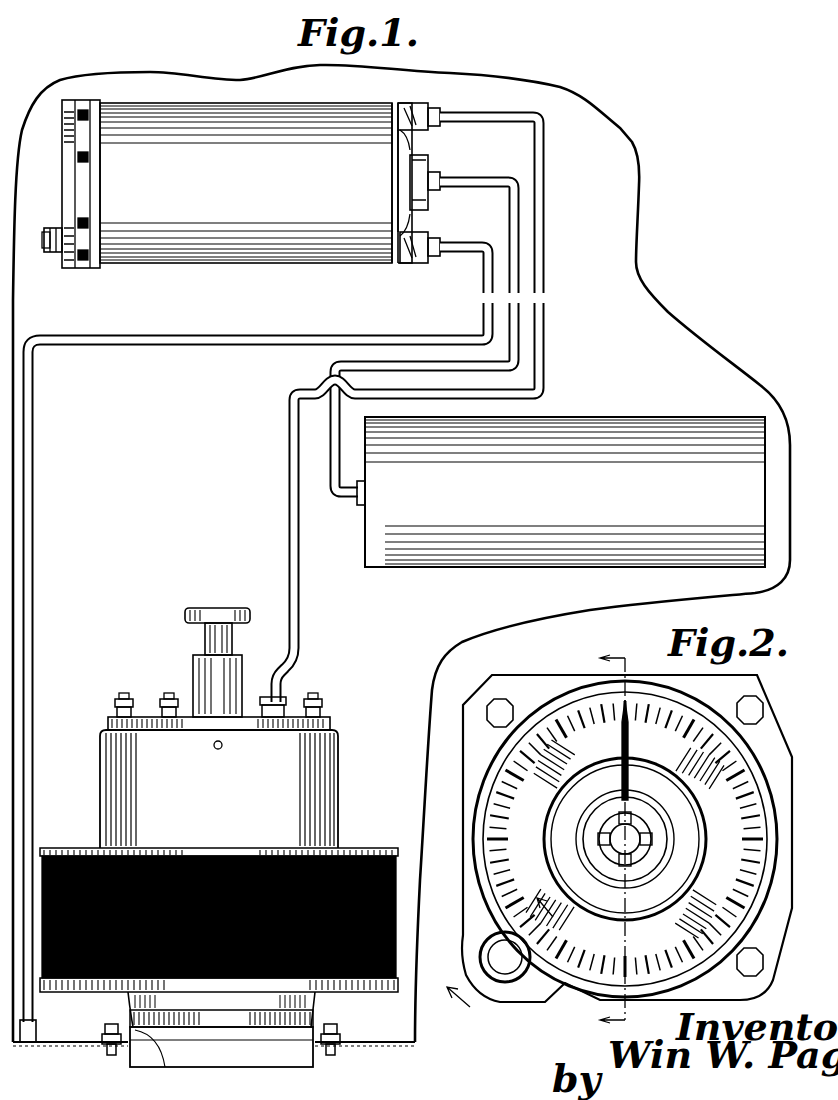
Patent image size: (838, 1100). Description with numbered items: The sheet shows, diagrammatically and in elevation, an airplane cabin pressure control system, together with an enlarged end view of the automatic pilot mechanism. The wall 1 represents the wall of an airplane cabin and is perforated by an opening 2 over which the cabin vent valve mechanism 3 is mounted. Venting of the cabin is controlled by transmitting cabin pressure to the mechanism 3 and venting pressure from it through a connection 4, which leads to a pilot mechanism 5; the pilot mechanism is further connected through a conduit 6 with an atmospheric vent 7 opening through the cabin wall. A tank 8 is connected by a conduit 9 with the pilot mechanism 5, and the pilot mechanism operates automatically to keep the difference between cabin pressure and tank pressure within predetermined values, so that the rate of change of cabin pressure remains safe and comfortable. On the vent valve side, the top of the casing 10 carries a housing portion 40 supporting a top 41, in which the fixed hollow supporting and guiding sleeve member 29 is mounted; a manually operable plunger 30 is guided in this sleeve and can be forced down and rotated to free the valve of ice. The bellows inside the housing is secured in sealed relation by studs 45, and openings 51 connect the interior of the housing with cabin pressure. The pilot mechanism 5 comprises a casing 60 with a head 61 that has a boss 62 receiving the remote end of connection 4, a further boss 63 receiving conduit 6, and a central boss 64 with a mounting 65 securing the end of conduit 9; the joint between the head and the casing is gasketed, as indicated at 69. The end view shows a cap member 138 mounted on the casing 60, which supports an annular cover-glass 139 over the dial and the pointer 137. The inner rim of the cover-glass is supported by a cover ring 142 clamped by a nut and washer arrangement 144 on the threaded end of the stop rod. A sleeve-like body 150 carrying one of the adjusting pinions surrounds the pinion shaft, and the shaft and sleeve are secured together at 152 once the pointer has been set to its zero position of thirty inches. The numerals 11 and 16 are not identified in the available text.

In FIG. 1, the wall 1 is at (668, 345).
In FIG. 1, the opening 2 is at (126, 1055).
In FIG. 1, the cabin vent valve mechanism 3 is at (211, 709).
In FIG. 2, the cabin vent valve mechanism 3 is at (526, 840).
In FIG. 1, the connection 4 is at (289, 530).
In FIG. 1, the pilot mechanism 5 is at (248, 168).
In FIG. 2, the pilot mechanism 5 is at (462, 732).
In FIG. 1, the conduit 6 is at (198, 336).
In FIG. 1, the atmospheric vent 7 is at (30, 1042).
In FIG. 1, the tank 8 is at (625, 437).
In FIG. 1, the conduit 9 is at (519, 241).
In FIG. 1, the casing 10 is at (312, 999).
In FIG. 1, the base 11 is at (163, 1062).
In FIG. 1, the solenoid coil 16 is at (72, 848).
In FIG. 1, the supporting and guiding sleeve member 29 is at (196, 656).
In FIG. 1, the manually operable plunger 30 is at (218, 608).
In FIG. 1, the housing portion 40 is at (100, 775).
In FIG. 1, the top 41 is at (108, 722).
In FIG. 1, the studs 45 is at (123, 699).
In FIG. 1, the openings 51 is at (215, 742).
In FIG. 1, the casing 60 is at (284, 266).
In FIG. 1, the head 61 is at (406, 153).
In FIG. 1, the boss 62 is at (412, 108).
In FIG. 1, the boss 63 is at (427, 265).
In FIG. 1, the central boss 64 is at (428, 204).
In FIG. 1, the mounting 65 is at (441, 180).
In FIG. 1, the gasketed joint 69 is at (394, 266).
In FIG. 2, the pointer 137 is at (632, 740).
In FIG. 1, the cap member 138 is at (65, 108).
In FIG. 2, the cap member 138 is at (535, 676).
In FIG. 2, the cover-glass 139 is at (522, 800).
In FIG. 2, the cover ring 142 is at (683, 870).
In FIG. 2, the nut and washer arrangement 144 is at (610, 842).
In FIG. 1, the sleeve-like body 150 is at (58, 254).
In FIG. 1, the securing point 152 is at (50, 231).
In FIG. 2, the securing point 152 is at (505, 983).